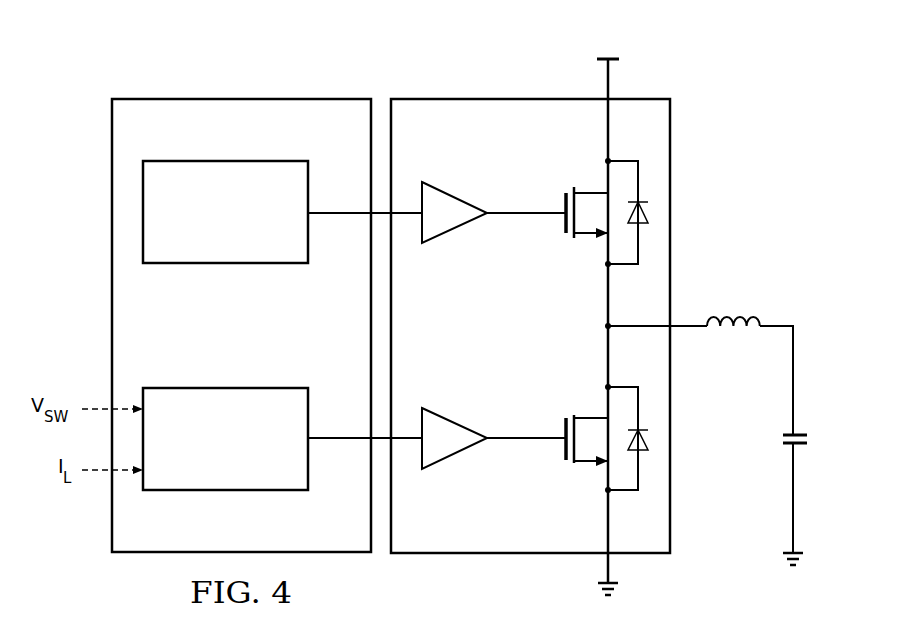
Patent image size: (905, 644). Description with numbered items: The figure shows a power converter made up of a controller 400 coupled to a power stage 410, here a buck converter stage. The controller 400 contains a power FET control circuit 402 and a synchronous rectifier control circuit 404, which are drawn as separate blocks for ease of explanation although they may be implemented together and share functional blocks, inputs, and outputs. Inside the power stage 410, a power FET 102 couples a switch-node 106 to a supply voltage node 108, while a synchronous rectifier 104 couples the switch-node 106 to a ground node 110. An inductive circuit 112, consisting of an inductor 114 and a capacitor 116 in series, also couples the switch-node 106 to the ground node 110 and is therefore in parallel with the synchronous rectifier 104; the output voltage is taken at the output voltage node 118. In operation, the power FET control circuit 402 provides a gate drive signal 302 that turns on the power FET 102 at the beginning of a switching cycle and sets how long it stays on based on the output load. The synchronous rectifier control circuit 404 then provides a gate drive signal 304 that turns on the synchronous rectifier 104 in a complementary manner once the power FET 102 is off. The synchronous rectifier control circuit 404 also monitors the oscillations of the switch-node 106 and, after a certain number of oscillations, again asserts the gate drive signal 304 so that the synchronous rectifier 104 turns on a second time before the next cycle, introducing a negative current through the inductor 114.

The controller 400 is at (216, 92).
The power FET control circuit 402 is at (226, 265).
The synchronous rectifier control circuit 404 is at (226, 492).
The gate drive signal 302 is at (350, 211).
The gate drive signal 304 is at (350, 440).
The power stage 410 is at (509, 92).
The supply voltage node 108 is at (612, 84).
The power FET 102 is at (562, 206).
The synchronous rectifier 104 is at (562, 446).
The switch-node 106 is at (612, 322).
The ground node 110 is at (620, 588).
The inductive circuit 112 is at (796, 224).
The inductor 114 is at (733, 316).
The capacitor 116 is at (808, 438).
The output voltage node 118 is at (784, 324).